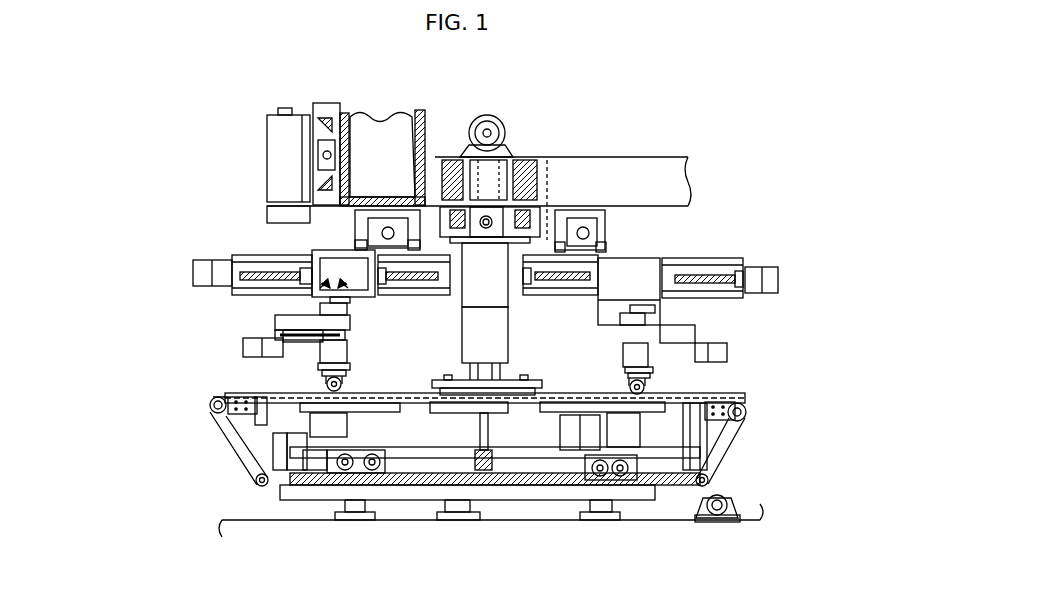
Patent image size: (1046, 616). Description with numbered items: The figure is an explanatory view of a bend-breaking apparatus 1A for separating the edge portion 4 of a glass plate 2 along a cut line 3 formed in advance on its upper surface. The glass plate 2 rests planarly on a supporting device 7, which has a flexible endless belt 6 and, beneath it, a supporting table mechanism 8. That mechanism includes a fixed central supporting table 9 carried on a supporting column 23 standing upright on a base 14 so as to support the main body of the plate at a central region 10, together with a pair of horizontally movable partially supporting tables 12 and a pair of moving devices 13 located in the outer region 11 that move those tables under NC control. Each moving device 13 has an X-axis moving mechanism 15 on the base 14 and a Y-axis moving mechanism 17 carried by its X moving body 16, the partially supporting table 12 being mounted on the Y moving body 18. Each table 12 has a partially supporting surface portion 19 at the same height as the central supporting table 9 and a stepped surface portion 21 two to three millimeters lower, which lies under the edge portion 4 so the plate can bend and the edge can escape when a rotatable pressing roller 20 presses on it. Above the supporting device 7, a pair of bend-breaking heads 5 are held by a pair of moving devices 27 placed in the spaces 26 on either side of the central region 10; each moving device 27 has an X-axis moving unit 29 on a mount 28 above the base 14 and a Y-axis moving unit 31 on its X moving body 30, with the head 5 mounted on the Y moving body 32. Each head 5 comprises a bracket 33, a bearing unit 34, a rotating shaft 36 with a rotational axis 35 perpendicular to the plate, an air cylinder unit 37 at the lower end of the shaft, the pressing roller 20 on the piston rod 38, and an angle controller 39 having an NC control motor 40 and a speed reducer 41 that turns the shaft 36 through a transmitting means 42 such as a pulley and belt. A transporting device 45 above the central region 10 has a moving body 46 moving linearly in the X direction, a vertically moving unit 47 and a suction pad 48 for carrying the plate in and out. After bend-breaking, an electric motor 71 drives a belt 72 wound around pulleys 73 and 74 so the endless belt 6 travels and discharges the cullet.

The bend-breaking apparatus 1A is at (695, 211).
The glass plate 2 is at (427, 402).
The cut line 3 is at (337, 383).
The edge portion 4 is at (343, 400).
The bend-breaking head 5 is at (352, 338).
The endless belt 6 is at (300, 390).
The supporting device 7 is at (423, 392).
The supporting table mechanism 8 is at (520, 413).
The central supporting table 9 is at (513, 405).
The central region 10 is at (487, 237).
The outer region 11 is at (575, 402).
The partially supporting table 12 is at (380, 435).
The moving device 13 is at (385, 445).
The base 14 is at (393, 478).
The X-axis moving mechanism 15 is at (345, 470).
The X moving body 16 is at (370, 472).
The Y-axis moving mechanism 17 is at (320, 440).
The Y moving body 18 is at (317, 432).
The partially supporting surface portion 19 is at (355, 407).
The pressing roller 20 is at (320, 386).
The stepped surface portion 21 is at (355, 406).
The supporting column 23 is at (476, 440).
The space 26 is at (440, 318).
The moving device 27 is at (232, 328).
The mount 28 is at (385, 197).
The X-axis moving unit 29 is at (378, 227).
The X moving body 30 is at (355, 243).
The Y-axis moving unit 31 is at (257, 268).
The Y moving body 32 is at (333, 290).
The bracket 33 is at (232, 328).
The bearing unit 34 is at (340, 300).
The rotational axis 35 is at (337, 340).
The rotating shaft 36 is at (340, 303).
The air cylinder unit 37 is at (413, 200).
The piston rod 38 is at (345, 357).
The angle controller 39 is at (257, 340).
The NC control motor 40 is at (247, 343).
The speed reducer 41 is at (283, 350).
The transmitting means 42 is at (330, 370).
The transporting device 45 is at (535, 205).
The moving body 46 is at (467, 213).
The vertically moving unit 47 is at (483, 333).
The suction pad 48 is at (481, 385).
The electric motor 71 is at (720, 514).
The belt 72 is at (730, 494).
The pulley 73 is at (713, 522).
The pulley 74 is at (660, 394).